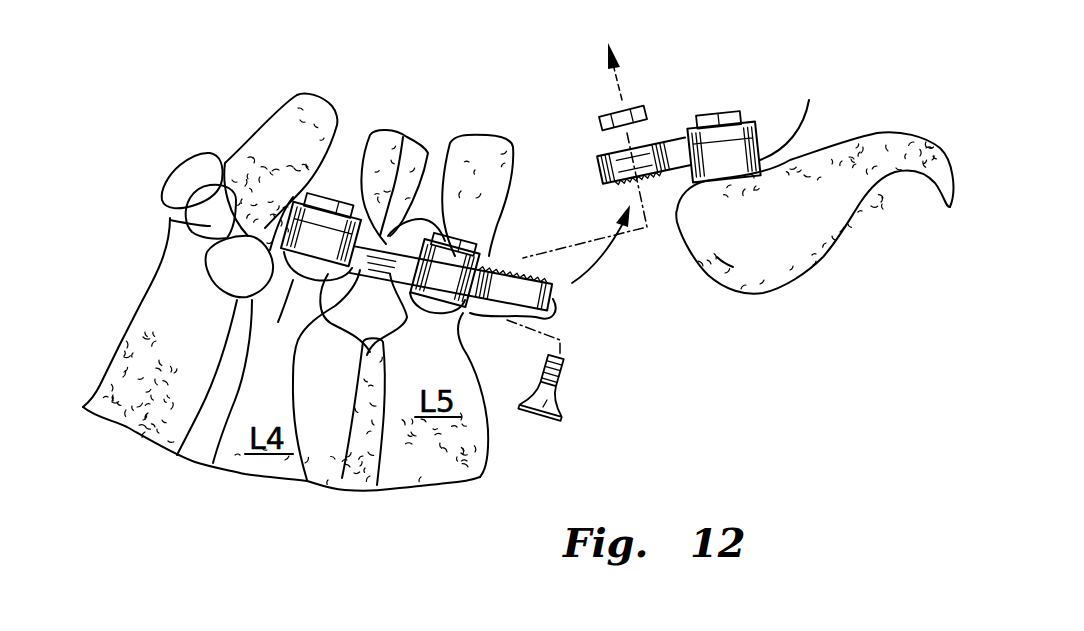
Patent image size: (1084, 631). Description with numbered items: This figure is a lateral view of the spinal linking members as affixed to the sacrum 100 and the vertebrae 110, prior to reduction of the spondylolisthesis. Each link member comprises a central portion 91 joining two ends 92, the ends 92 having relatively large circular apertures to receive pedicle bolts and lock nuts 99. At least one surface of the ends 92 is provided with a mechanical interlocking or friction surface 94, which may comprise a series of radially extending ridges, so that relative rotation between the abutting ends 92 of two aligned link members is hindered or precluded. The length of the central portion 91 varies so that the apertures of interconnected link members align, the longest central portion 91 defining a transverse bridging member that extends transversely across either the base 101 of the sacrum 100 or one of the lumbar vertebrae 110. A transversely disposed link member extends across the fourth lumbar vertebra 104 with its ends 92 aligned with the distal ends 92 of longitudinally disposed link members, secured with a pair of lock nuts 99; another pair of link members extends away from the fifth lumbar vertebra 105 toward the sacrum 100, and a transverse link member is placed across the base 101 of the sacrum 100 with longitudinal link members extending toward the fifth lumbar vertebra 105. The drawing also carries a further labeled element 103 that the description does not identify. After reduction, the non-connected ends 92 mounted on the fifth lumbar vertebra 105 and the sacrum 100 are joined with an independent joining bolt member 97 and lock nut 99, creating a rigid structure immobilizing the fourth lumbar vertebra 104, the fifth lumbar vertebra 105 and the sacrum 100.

The central portion 91 is at (688, 140).
The ends 92 is at (378, 238).
The friction surface 94 is at (507, 262).
The joining bolt member 97 is at (560, 388).
The lock nut 99 is at (350, 203).
The sacrum 100 is at (840, 240).
The base of the sacrum 101 is at (700, 270).
The vertebral body 103 is at (200, 467).
The L4 vertebra 104 is at (257, 477).
The L5 vertebra 105 is at (447, 488).
The vertebrae 110 is at (115, 486).